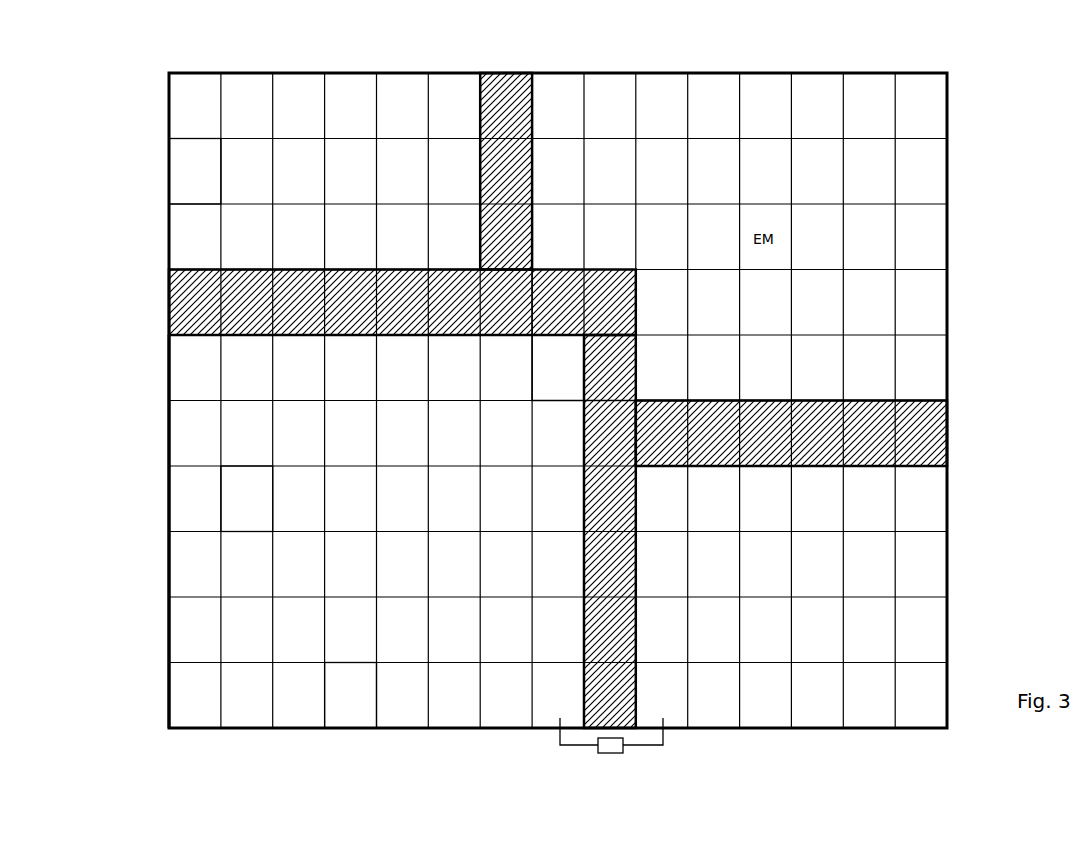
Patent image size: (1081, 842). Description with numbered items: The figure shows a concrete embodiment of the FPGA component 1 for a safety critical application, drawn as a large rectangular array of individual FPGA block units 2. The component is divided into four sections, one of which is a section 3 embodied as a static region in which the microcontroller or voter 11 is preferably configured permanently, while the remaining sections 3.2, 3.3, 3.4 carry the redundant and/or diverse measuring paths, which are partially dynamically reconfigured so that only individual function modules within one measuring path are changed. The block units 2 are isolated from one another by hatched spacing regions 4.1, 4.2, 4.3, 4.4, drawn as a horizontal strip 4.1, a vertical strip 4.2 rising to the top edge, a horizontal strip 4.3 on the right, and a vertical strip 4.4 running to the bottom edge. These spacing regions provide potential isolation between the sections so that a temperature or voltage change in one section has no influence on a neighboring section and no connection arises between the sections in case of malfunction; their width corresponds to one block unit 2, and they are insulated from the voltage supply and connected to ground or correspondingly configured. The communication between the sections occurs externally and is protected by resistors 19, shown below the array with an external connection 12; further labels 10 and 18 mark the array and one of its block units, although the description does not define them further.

The FPGA component 1 is at (988, 185).
The block unit 2 is at (519, 388).
The section 3 is at (128, 573).
The section 3.2 is at (190, 98).
The section 3.3 is at (923, 102).
The section 3.4 is at (917, 637).
The spacing region 4.1 is at (170, 307).
The spacing region 4.2 is at (500, 95).
The spacing region 4.3 is at (946, 410).
The spacing region 4.4 is at (587, 702).
The module grid 10 is at (143, 361).
The microcontroller or voter 11 is at (230, 510).
The connection circuit 12 is at (630, 748).
The module 18 is at (355, 695).
The resistor 19 is at (607, 753).